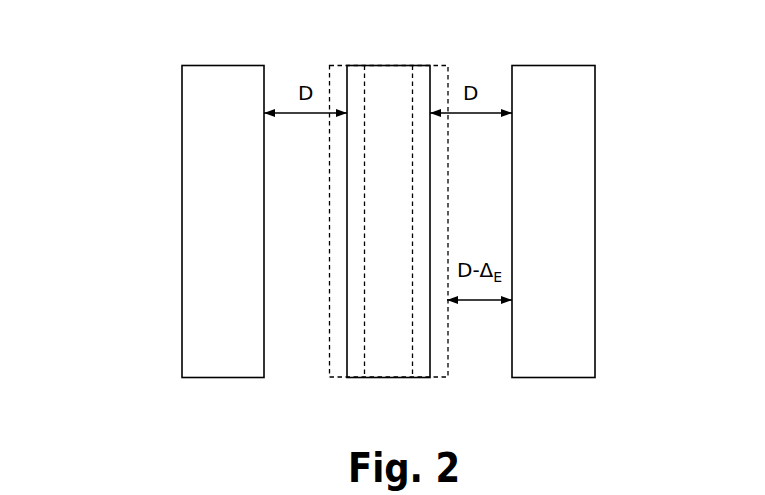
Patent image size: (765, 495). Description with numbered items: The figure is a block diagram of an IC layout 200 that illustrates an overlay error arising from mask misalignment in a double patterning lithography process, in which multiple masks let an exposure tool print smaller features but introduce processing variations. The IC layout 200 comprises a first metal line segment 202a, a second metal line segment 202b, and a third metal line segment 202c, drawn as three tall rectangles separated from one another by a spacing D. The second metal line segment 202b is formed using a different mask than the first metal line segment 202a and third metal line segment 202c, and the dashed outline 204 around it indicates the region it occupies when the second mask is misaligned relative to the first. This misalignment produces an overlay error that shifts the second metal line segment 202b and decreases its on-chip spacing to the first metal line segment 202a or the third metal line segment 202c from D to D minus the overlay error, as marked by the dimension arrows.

The IC layout 200 is at (112, 27).
The first metal line segment 202a is at (187, 389).
The second metal line segment 202b is at (357, 389).
The third metal line segment 202c is at (588, 388).
The nominal electrode region 204 is at (452, 388).